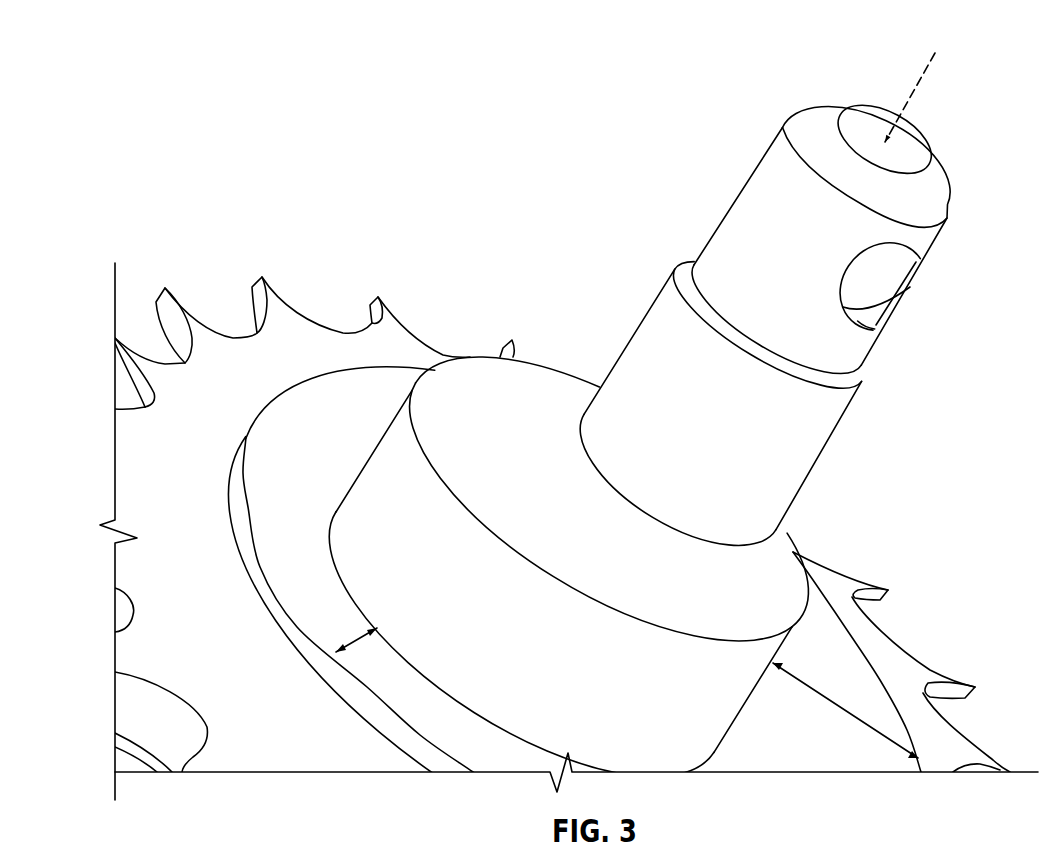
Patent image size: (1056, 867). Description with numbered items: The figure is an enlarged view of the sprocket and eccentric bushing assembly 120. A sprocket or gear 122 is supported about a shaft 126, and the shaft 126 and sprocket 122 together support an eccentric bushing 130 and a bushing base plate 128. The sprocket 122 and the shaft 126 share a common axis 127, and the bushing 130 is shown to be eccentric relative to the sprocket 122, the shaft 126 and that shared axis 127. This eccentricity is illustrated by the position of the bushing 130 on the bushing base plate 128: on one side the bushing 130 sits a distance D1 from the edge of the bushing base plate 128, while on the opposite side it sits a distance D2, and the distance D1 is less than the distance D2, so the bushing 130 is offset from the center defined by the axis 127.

The sprocket and eccentric bushing assembly 120 is at (592, 208).
The sprocket 122 is at (297, 343).
The shaft 126 is at (923, 160).
The axis 127 is at (912, 98).
The bushing base plate 128 is at (390, 383).
The eccentric bushing 130 is at (522, 377).
The distance D1 is at (351, 643).
The distance D2 is at (840, 706).